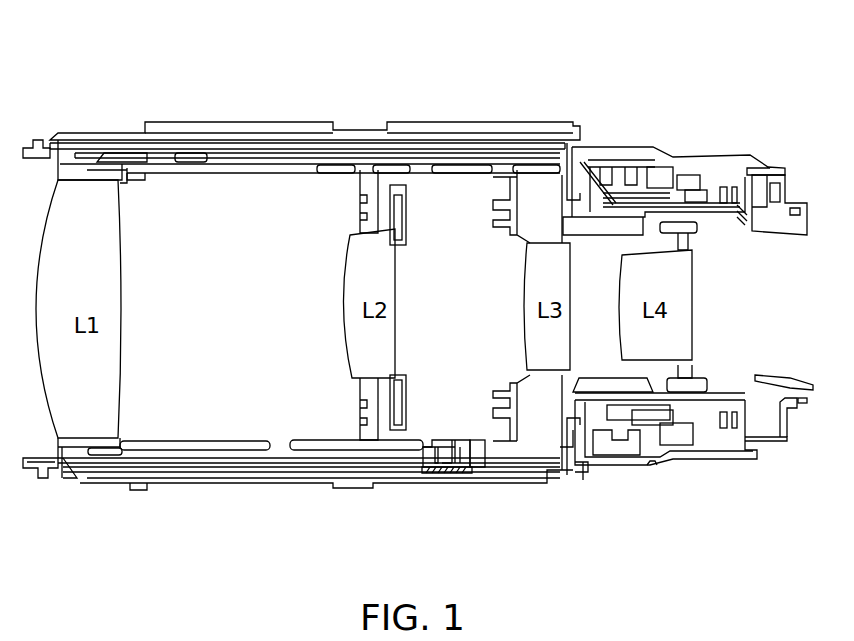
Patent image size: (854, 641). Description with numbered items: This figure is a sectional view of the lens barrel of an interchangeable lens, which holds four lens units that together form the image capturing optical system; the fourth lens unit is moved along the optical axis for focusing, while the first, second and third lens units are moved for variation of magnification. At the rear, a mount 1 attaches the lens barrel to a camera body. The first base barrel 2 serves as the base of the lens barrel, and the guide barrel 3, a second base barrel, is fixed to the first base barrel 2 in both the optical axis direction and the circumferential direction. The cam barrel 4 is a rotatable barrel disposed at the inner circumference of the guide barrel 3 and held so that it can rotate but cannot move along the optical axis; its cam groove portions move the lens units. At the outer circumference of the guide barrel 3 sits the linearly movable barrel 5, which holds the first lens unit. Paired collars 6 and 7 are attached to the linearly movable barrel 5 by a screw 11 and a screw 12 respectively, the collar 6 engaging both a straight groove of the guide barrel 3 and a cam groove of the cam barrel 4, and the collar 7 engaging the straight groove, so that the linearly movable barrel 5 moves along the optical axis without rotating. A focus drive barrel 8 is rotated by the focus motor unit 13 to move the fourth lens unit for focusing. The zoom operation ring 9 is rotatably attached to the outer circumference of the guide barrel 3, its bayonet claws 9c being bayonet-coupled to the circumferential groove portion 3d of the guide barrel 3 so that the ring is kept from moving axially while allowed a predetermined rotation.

The mount 1 is at (790, 202).
The first base barrel 2 is at (703, 152).
The guide barrel 3 is at (511, 128).
The circumferential groove portion 3d is at (470, 129).
The cam barrel 4 is at (418, 129).
The linearly movable barrel 5 is at (258, 127).
The collar 6 is at (460, 467).
The collar 7 is at (423, 467).
The focus drive barrel 8 is at (623, 218).
The zoom operation ring 9 is at (130, 126).
The bayonet claw 9c is at (310, 95).
The screw 11 is at (453, 468).
The screw 12 is at (428, 468).
The focus motor unit 13 is at (660, 163).